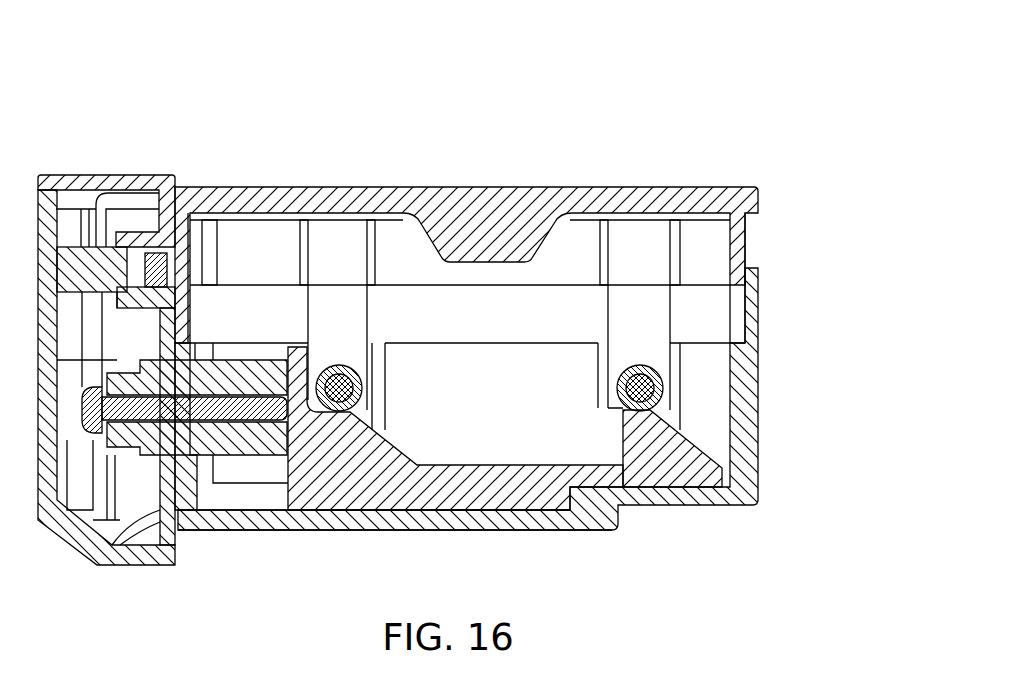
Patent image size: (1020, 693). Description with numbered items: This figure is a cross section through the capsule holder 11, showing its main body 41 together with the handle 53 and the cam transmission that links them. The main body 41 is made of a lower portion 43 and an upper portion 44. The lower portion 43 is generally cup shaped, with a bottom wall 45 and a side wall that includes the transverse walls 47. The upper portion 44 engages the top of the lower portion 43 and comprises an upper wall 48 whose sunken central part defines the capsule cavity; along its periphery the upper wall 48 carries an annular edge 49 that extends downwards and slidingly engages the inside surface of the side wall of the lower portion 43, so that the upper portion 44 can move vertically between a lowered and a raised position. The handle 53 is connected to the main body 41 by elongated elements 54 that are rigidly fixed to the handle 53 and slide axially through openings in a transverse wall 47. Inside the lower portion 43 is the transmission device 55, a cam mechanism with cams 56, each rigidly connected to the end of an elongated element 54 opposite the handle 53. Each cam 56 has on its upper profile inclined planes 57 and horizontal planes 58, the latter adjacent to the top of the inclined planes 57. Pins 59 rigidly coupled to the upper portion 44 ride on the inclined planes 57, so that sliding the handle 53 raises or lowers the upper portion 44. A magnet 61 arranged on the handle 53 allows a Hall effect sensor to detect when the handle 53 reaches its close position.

The capsule holder 11 is at (780, 137).
The main body 41 is at (397, 162).
The lower portion 43 is at (796, 433).
The upper portion 44 is at (786, 183).
The bottom wall 45 is at (573, 532).
The transverse wall 47 is at (758, 350).
The upper wall 48 is at (641, 187).
The annular edge 49 is at (746, 241).
The handle 53 is at (90, 168).
The elongated element 54 is at (253, 457).
The transmission device 55 is at (380, 518).
The cam 56 is at (327, 505).
The inclined plane 57 is at (705, 436).
The horizontal plane 58 is at (318, 392).
The pin 59 is at (373, 390).
The magnet 61 is at (160, 178).